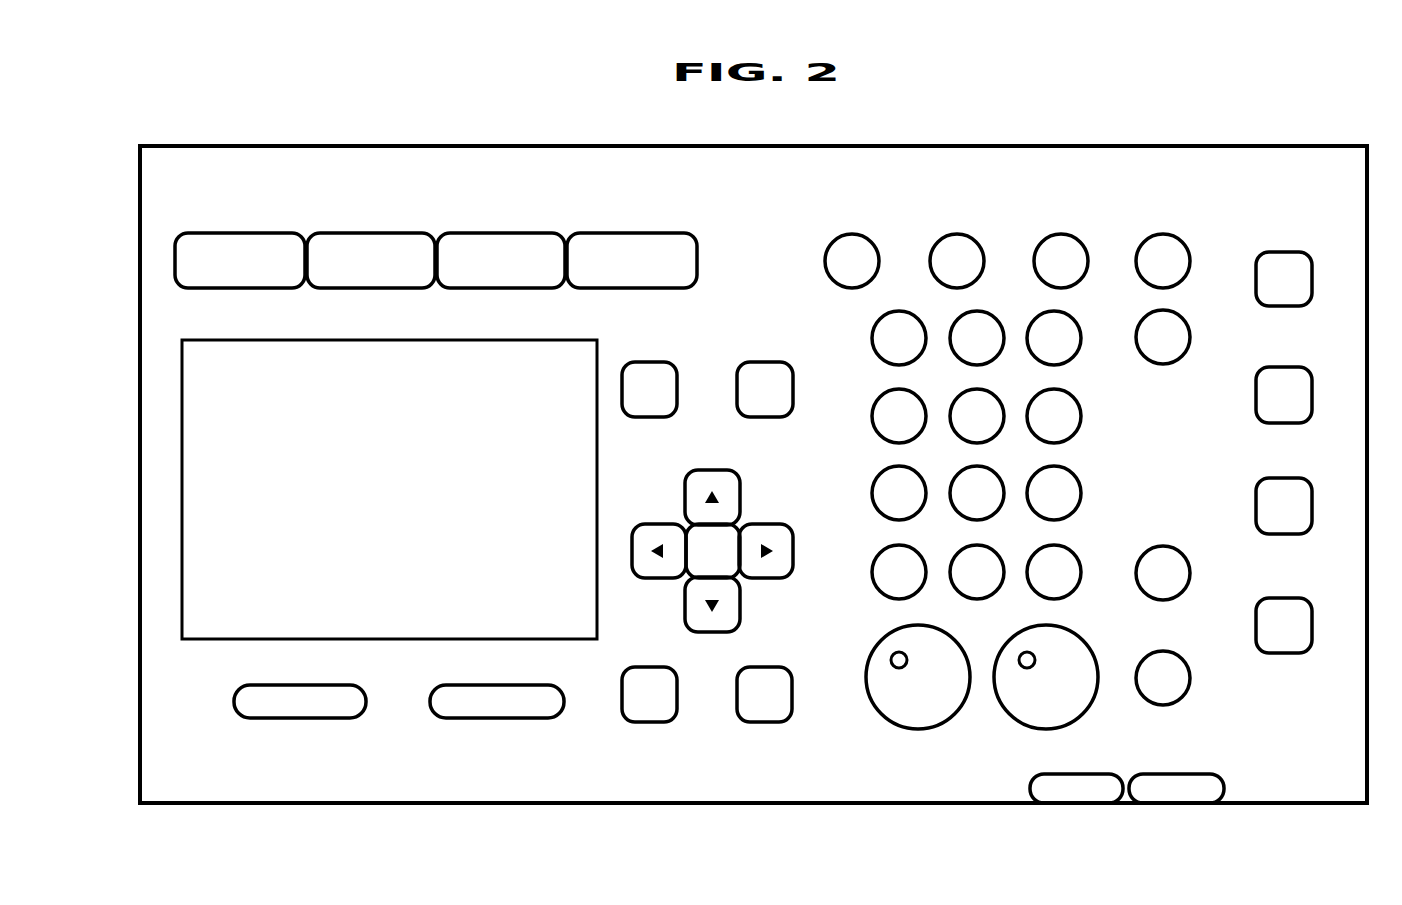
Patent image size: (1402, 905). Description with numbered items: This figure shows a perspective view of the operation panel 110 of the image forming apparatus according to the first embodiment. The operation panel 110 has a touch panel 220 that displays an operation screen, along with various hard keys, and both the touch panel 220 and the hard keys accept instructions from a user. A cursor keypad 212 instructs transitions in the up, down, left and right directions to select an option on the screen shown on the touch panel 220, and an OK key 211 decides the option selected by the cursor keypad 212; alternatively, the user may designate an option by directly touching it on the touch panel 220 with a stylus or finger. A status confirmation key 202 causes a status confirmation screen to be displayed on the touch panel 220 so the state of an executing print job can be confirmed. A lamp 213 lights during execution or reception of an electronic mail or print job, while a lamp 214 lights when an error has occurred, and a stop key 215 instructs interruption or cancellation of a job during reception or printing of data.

The operation panel 110 is at (368, 126).
The touch panel 220 is at (522, 350).
The cursor keypad 212 is at (712, 470).
The OK key 211 is at (728, 543).
The status confirmation key 202 is at (1068, 270).
The stop key 215 is at (1180, 677).
The lamp (LED) 213 is at (1079, 793).
The lamp (LED) 214 is at (1178, 793).